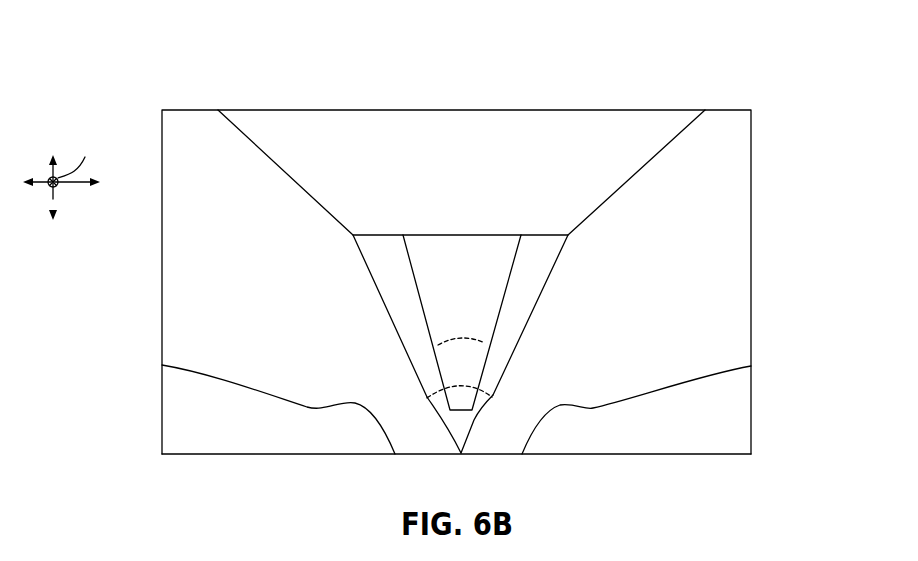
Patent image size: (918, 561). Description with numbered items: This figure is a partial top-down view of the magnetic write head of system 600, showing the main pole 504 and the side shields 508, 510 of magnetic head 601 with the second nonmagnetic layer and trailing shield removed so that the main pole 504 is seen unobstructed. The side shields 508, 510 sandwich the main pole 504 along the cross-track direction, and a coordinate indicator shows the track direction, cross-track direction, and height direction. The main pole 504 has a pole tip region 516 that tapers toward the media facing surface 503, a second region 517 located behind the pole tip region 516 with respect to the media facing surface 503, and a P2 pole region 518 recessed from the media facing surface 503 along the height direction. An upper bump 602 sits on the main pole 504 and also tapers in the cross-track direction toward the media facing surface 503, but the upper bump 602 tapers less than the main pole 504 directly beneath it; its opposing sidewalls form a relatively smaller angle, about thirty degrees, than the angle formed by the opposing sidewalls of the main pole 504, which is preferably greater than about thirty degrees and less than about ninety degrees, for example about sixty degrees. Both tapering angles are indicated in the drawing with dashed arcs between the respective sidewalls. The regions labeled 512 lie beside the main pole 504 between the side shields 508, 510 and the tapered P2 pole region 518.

The system 600 is at (98, 80).
The magnetic head 601 is at (93, 317).
The media facing surface 503 is at (265, 463).
The main pole 504 is at (595, 285).
The side shield 508 is at (194, 434).
The side shield 510 is at (669, 434).
The isolation region 512 is at (216, 342).
The pole tip region 516 is at (468, 443).
The second region 517 is at (381, 296).
The P2 pole region 518 is at (437, 174).
The upper bump 602 is at (437, 297).